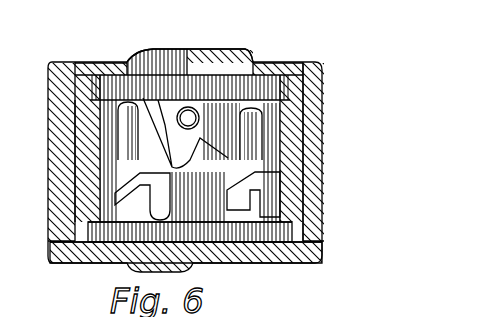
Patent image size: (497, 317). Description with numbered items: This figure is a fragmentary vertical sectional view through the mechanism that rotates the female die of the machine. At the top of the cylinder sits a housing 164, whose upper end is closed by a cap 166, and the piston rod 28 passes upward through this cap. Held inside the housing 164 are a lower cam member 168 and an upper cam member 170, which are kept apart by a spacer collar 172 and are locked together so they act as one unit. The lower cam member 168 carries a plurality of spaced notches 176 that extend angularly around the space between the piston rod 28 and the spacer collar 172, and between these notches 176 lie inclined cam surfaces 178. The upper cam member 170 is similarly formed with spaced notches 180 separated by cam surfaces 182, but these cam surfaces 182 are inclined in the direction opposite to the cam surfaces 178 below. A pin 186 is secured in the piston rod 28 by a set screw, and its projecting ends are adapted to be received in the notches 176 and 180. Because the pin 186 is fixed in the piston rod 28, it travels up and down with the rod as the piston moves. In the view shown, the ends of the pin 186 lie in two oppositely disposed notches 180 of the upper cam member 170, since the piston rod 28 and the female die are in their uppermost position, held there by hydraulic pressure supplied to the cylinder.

The piston rod 28 is at (168, 62).
The housing 164 is at (318, 95).
The cap 166 is at (103, 68).
The lower cam member 168 is at (292, 226).
The upper cam member 170 is at (273, 63).
The spacer collar 172 is at (92, 153).
The notches 176 is at (200, 250).
The inclined cam surfaces 178 is at (275, 185).
The notches 180 is at (148, 102).
The cam surfaces 182 is at (212, 172).
The pin 186 is at (192, 118).